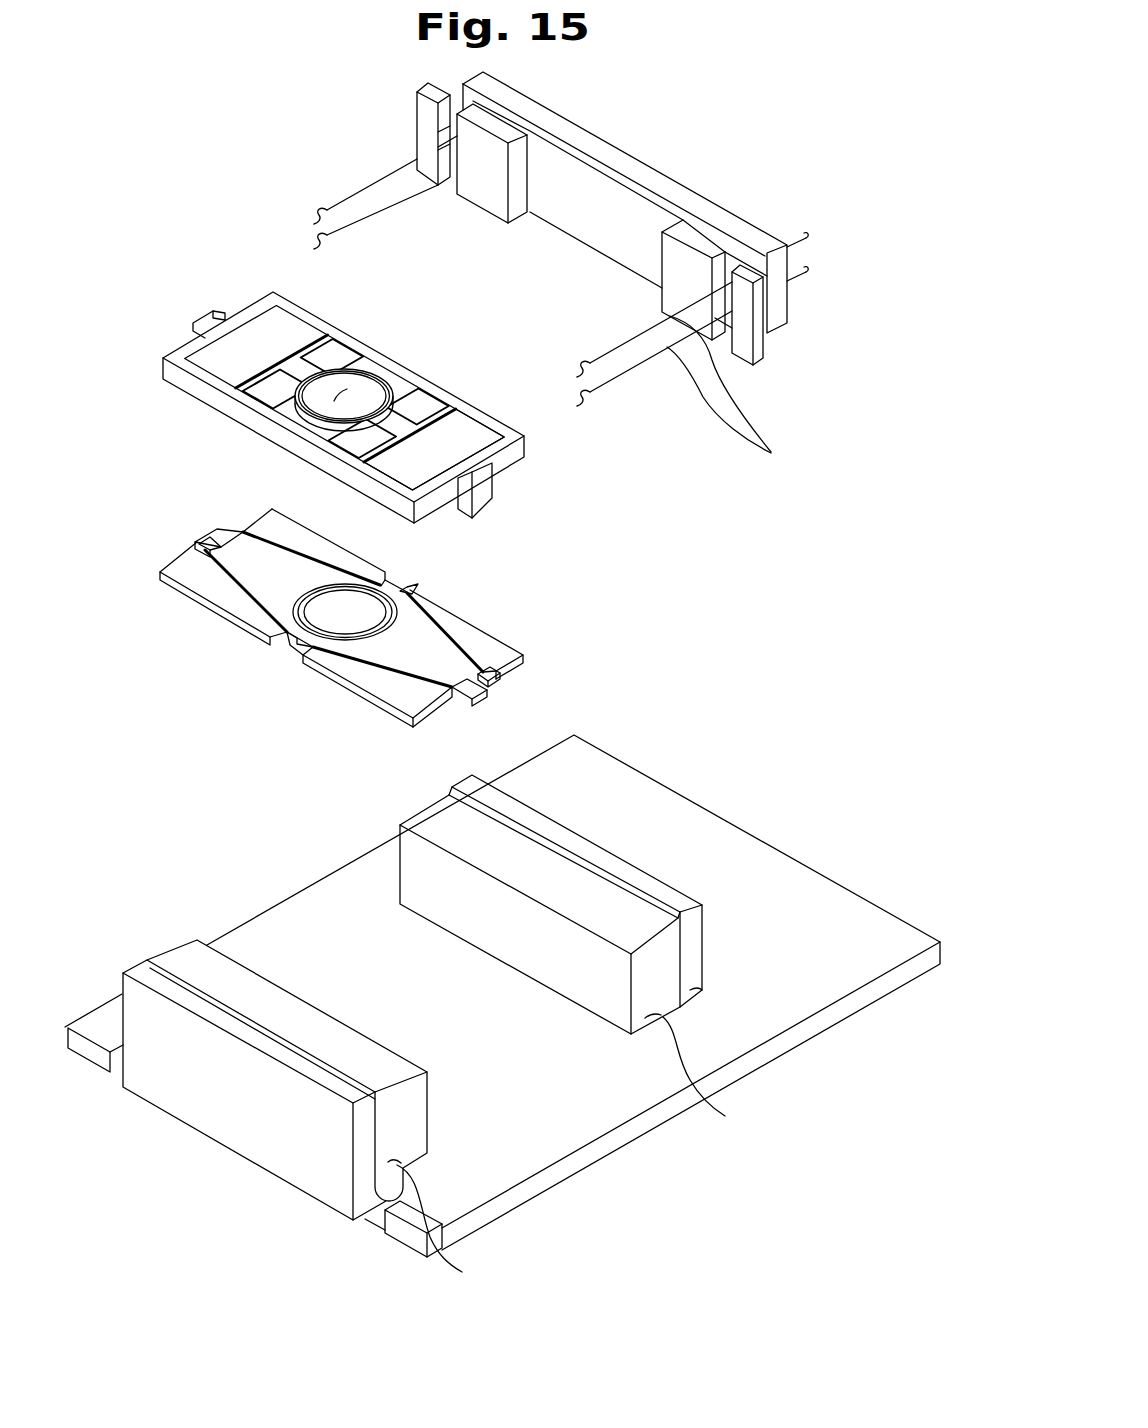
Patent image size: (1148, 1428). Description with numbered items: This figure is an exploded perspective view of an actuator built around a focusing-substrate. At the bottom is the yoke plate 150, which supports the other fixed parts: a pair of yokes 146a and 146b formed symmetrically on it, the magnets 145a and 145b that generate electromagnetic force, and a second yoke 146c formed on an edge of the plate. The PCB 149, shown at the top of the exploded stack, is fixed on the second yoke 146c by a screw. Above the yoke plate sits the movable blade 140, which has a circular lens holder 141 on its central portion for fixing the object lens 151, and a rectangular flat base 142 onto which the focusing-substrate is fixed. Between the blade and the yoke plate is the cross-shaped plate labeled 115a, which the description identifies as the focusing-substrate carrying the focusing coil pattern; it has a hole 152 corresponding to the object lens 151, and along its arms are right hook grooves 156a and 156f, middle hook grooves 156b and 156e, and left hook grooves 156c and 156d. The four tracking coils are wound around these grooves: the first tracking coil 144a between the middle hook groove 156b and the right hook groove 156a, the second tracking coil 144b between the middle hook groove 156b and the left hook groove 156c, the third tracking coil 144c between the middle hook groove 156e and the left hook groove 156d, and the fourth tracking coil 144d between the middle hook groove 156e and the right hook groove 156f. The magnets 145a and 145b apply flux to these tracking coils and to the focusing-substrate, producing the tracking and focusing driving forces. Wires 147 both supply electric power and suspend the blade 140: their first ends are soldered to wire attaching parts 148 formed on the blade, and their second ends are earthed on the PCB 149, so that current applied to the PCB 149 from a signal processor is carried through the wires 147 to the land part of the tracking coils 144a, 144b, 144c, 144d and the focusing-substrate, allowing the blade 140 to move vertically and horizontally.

The plate spring 115a is at (512, 650).
The blade 140 is at (240, 312).
The lens holder 141 is at (373, 372).
The rectangular flat base 142 is at (467, 423).
The first tracking coil 144a is at (283, 538).
The second tracking coil 144b is at (515, 658).
The third tracking coil 144c is at (377, 675).
The fourth tracking coil 144d is at (240, 594).
The magnet 145a is at (716, 1077).
The magnet 145b is at (458, 1204).
The yoke 146a is at (700, 990).
The yoke 146b is at (318, 1184).
The second yoke 146c is at (757, 327).
The wire 147 is at (737, 396).
The wire attaching part 148 is at (494, 500).
The PCB 149 is at (738, 220).
The yoke plate 150 is at (502, 1018).
The object lens 151 is at (362, 383).
The hole 152 is at (341, 615).
The right hook groove 156a is at (233, 535).
The middle hook groove 156b is at (412, 589).
The left hook groove 156c is at (492, 676).
The left hook groove 156d is at (455, 697).
The middle hook groove 156e is at (287, 648).
The right hook groove 156f is at (197, 549).